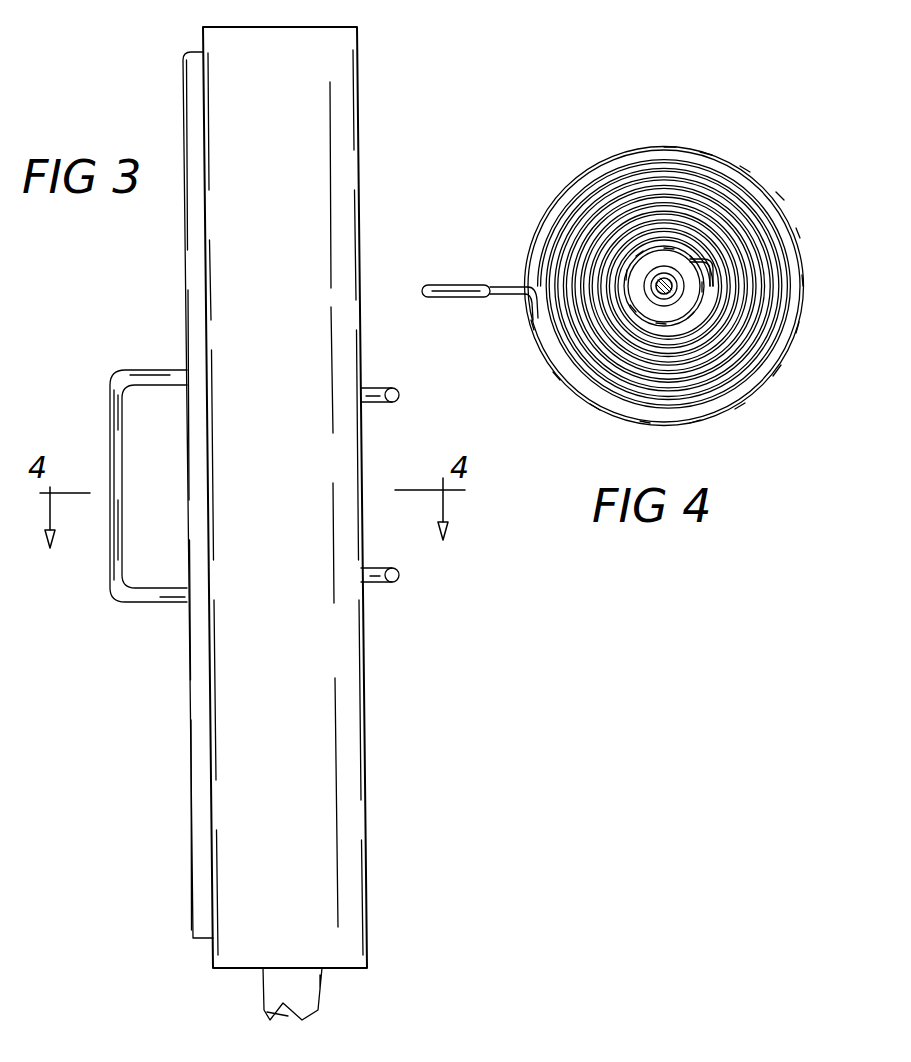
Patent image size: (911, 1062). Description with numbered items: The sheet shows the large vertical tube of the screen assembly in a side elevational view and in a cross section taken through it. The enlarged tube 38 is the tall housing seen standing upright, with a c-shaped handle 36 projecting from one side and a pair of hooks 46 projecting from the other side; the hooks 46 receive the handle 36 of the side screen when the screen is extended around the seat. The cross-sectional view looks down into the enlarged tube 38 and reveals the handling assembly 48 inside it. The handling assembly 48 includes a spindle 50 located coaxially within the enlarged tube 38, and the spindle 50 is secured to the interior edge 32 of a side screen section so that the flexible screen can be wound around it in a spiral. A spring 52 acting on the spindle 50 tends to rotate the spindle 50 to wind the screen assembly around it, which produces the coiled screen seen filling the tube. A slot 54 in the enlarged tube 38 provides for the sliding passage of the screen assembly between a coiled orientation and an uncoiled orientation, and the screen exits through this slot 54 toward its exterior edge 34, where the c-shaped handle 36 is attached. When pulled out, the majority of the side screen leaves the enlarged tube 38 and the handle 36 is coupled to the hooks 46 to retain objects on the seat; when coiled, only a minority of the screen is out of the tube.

In FIG. 4, the interior edge 32 is at (657, 227).
In FIG. 4, the exterior edge 34 is at (503, 287).
In FIG. 3, the c-shaped handle 36 is at (113, 415).
In FIG. 4, the c-shaped handle 36 is at (447, 287).
In FIG. 3, the enlarged tube 38 is at (357, 107).
In FIG. 4, the enlarged tube 38 is at (743, 168).
In FIG. 3, the hooks 46 is at (380, 388).
In FIG. 4, the handling assembly 48 is at (694, 264).
In FIG. 4, the spindle 50 is at (670, 296).
In FIG. 4, the spring 52 is at (653, 262).
In FIG. 4, the slot 54 is at (527, 280).